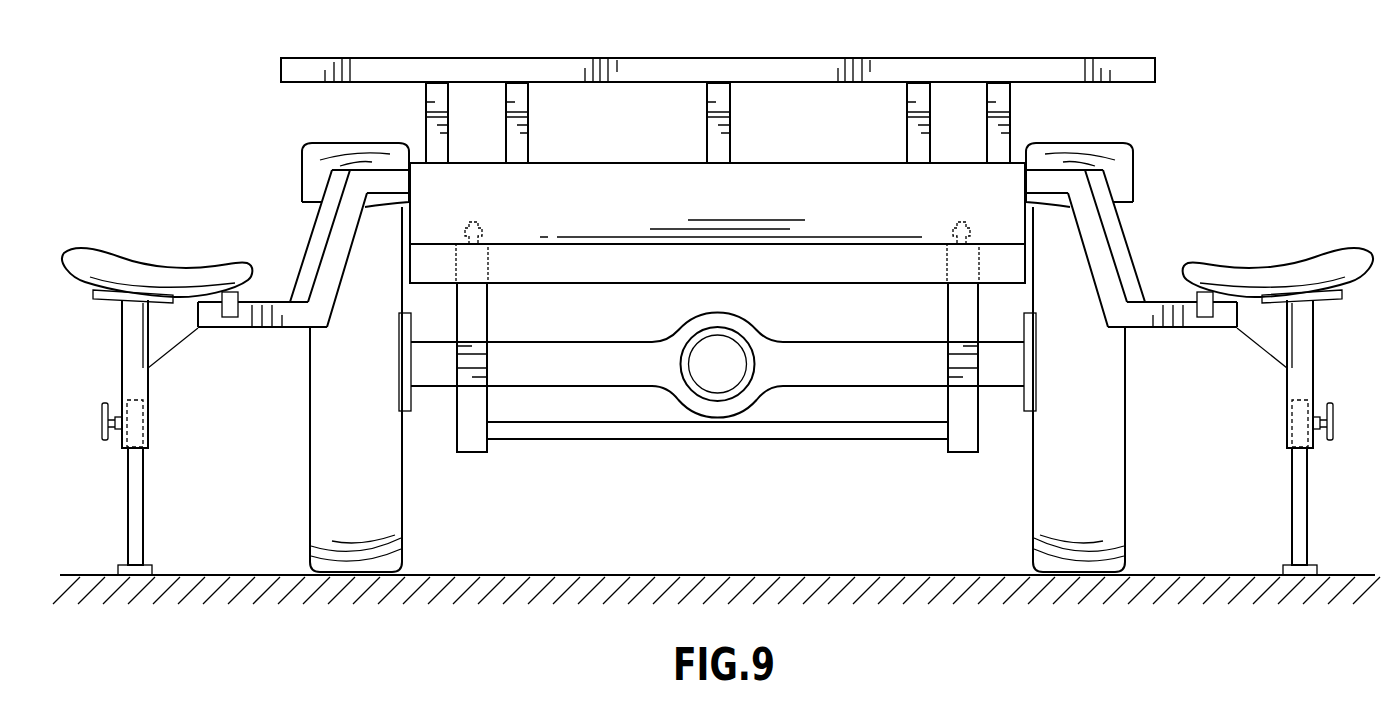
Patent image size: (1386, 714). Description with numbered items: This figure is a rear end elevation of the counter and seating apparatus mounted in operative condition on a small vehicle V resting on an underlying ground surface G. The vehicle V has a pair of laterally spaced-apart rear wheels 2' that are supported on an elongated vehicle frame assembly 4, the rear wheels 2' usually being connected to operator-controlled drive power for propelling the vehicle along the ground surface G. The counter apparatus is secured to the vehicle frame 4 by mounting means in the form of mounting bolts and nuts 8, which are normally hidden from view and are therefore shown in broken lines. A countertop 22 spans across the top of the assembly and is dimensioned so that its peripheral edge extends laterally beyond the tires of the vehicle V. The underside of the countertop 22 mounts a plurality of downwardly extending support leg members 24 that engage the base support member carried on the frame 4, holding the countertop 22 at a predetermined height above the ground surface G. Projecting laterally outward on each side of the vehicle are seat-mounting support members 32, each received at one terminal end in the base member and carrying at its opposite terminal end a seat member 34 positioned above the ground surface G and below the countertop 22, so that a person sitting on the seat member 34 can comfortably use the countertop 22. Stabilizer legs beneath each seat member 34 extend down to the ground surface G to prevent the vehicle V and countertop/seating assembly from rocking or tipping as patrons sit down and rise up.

The rear wheels 2' is at (720, 357).
The vehicle frame assembly 4 is at (472, 454).
The mounting bolts and nuts 8 is at (485, 229).
The countertop 22 is at (795, 64).
The support leg members 24 is at (426, 109).
The seat-mounting support members 32 is at (244, 368).
The seat members 34 is at (135, 262).
The vehicle V is at (698, 464).
The ground surface G is at (918, 575).